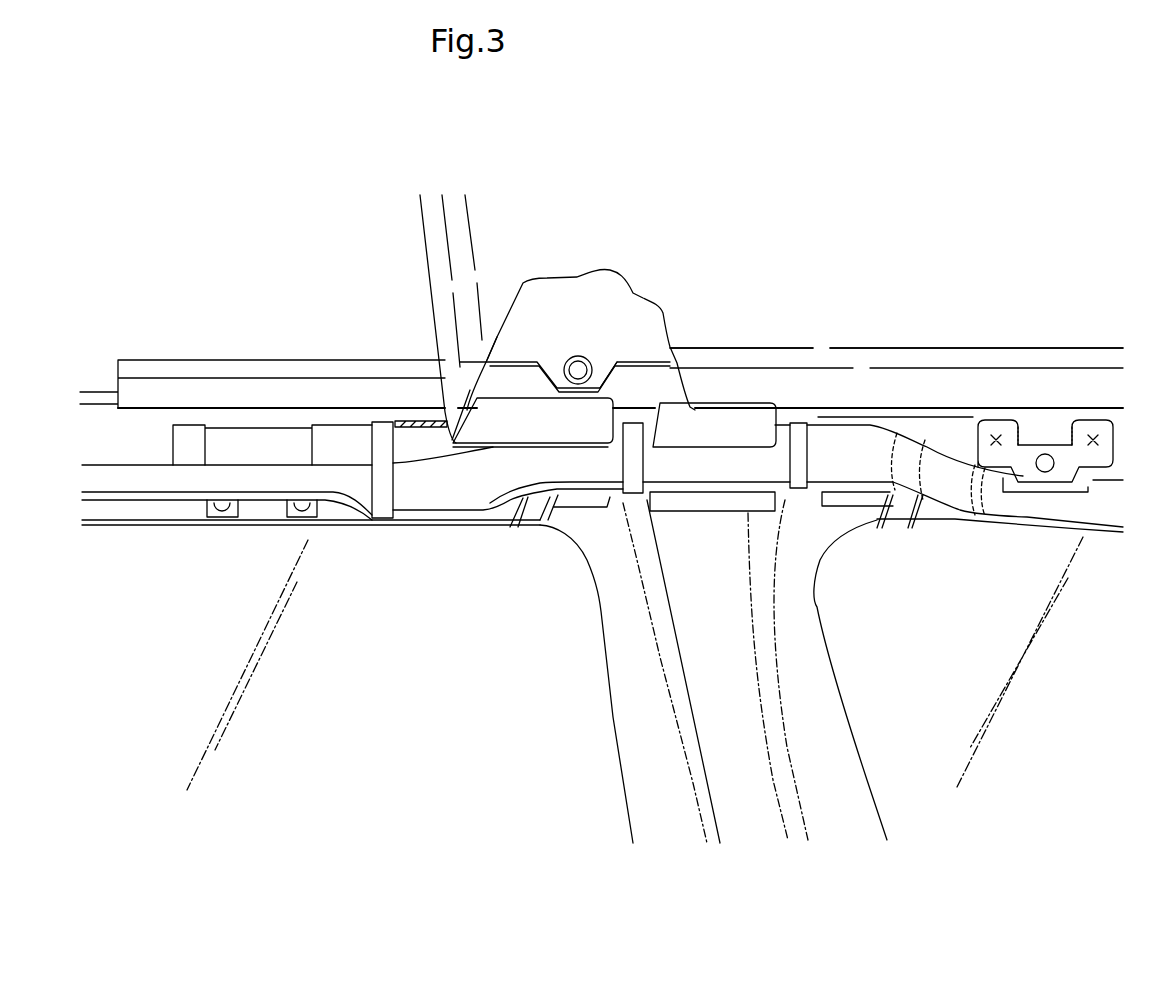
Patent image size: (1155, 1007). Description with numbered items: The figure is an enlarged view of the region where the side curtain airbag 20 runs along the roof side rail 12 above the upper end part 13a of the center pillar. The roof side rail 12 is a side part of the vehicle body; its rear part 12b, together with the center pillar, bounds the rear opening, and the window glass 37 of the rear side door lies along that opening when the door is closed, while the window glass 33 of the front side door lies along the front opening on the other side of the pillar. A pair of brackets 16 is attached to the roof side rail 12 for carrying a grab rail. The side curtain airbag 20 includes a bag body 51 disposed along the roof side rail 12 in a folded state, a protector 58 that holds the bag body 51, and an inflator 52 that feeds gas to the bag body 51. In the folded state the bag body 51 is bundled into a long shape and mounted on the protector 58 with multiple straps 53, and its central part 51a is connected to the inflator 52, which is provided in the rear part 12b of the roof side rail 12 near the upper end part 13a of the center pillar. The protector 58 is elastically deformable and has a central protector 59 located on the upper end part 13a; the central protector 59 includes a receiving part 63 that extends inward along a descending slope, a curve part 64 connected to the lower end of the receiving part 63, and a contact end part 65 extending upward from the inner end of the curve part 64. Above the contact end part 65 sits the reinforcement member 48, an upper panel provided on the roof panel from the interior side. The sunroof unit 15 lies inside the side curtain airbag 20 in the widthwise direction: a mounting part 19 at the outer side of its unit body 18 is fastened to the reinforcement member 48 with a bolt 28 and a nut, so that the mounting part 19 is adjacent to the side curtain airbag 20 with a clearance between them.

The roof side rail 12 is at (950, 430).
The rear part of the roof side rail 12b is at (362, 415).
The upper end part of the center pillar 13a is at (680, 535).
The sunroof unit 15 is at (858, 202).
The bracket 16 is at (1057, 477).
The unit body 18 is at (803, 228).
The mounting part 19 is at (612, 380).
The side curtain airbag 20 is at (858, 405).
The bolt 28 is at (582, 392).
The window glass of the front side door 33 is at (1010, 703).
The window glass of the rear side door 37 is at (230, 690).
The reinforcement member 48 is at (632, 385).
The bag body 51 is at (845, 490).
The central part of the bag body 51a is at (472, 497).
The inflator 52 is at (265, 440).
The strap 53 is at (383, 523).
The protector 58 is at (665, 393).
The central protector 59 is at (502, 397).
The receiving part 63 is at (445, 433).
The curve part 64 is at (557, 443).
The contact end part 65 is at (538, 415).